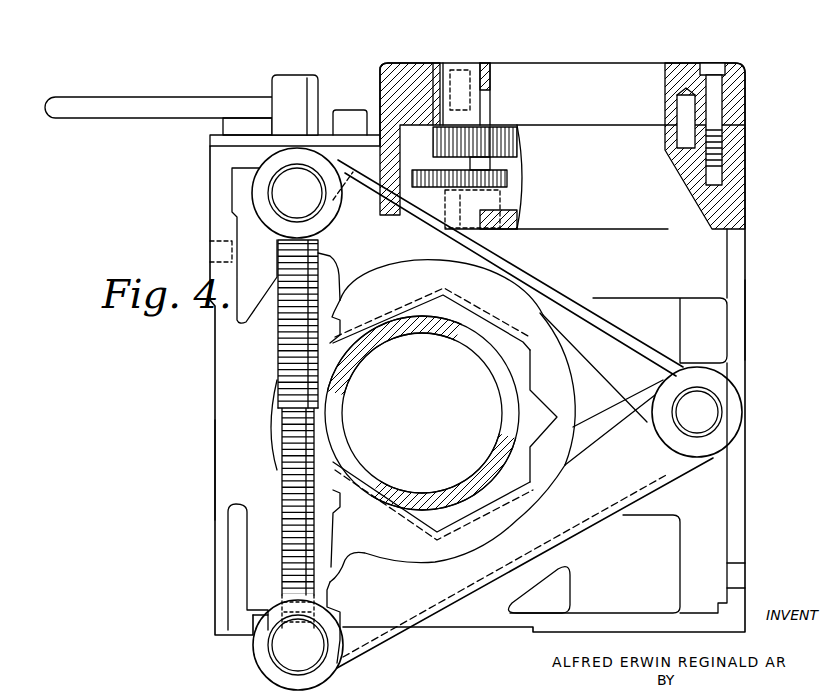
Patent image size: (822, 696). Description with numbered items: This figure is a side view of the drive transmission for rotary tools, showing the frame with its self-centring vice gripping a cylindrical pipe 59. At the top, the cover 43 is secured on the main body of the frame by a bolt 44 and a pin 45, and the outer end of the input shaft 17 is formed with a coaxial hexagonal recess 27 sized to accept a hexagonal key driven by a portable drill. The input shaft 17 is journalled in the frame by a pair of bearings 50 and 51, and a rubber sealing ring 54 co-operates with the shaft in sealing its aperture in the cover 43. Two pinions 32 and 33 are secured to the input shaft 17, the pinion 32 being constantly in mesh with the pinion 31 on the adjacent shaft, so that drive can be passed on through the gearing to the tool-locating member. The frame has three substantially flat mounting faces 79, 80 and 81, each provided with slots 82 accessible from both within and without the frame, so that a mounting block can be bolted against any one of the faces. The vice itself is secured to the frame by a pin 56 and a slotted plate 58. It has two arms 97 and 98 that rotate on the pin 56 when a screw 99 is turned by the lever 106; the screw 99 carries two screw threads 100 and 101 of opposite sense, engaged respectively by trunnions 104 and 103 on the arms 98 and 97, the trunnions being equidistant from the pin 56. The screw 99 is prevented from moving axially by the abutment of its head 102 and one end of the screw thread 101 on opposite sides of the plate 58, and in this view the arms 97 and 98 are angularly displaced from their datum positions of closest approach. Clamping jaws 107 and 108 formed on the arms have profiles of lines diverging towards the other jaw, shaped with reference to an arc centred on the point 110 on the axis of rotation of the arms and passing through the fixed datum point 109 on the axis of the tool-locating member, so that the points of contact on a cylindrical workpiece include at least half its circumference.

The input shaft 17 is at (472, 163).
The hexagonal recess 27 is at (458, 72).
The pinion 31 is at (505, 144).
The pinion 32 is at (471, 140).
The pinion 33 is at (507, 178).
The cover 43 is at (398, 80).
The bolt 44 is at (713, 100).
The pin 45 is at (690, 82).
The bearing 50 is at (487, 100).
The bearing 51 is at (515, 220).
The rubber sealing ring 54 is at (487, 75).
The pin 56 is at (703, 400).
The slotted plate 58 is at (343, 133).
The cylindrical pipe 59 is at (500, 384).
The mounting face 79 is at (745, 313).
The mounting face 80 is at (505, 632).
The mounting face 81 is at (215, 471).
The slots 82 is at (213, 250).
The arm 97 is at (518, 270).
The arm 98 is at (578, 540).
The screw 99 is at (278, 405).
The screw thread 100 is at (283, 557).
The screw thread 101 is at (275, 338).
The head 102 is at (287, 85).
The trunnion 103 is at (290, 193).
The trunnion 104 is at (285, 650).
The lever 106 is at (167, 103).
The clamping jaw 107 is at (424, 295).
The clamping jaw 108 is at (436, 557).
The datum point 109 is at (423, 418).
The point 110 is at (700, 413).